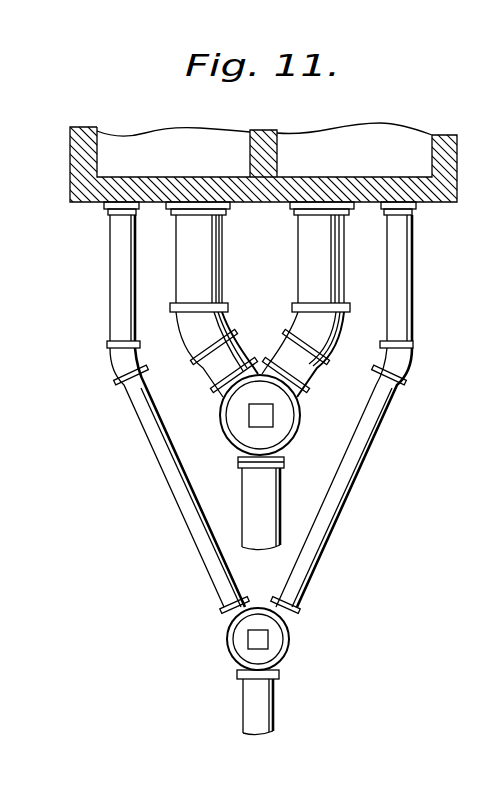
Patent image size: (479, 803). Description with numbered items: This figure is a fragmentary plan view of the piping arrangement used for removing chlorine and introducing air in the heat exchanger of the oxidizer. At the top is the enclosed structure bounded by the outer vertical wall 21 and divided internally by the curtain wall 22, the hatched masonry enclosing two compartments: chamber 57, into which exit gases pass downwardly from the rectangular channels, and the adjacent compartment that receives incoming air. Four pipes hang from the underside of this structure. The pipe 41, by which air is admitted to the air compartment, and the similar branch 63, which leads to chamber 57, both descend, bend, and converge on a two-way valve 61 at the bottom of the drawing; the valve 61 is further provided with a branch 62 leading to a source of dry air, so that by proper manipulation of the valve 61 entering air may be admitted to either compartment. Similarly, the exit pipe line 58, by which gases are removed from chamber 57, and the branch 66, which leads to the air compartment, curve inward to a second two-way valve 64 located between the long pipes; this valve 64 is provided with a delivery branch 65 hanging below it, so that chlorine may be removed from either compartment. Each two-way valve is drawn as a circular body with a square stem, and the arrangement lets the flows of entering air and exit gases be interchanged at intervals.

The vertical wall 21 is at (76, 203).
The chamber 57 is at (173, 144).
The curtain wall 22 is at (354, 142).
The branch 63 is at (115, 282).
The pipe line 58 is at (188, 268).
The branch 66 is at (301, 258).
The pipe 41 is at (395, 260).
The 2-way valve 64 is at (259, 376).
The delivery branch 65 is at (246, 512).
The 2-way valve 61 is at (238, 647).
The branch 62 is at (274, 705).